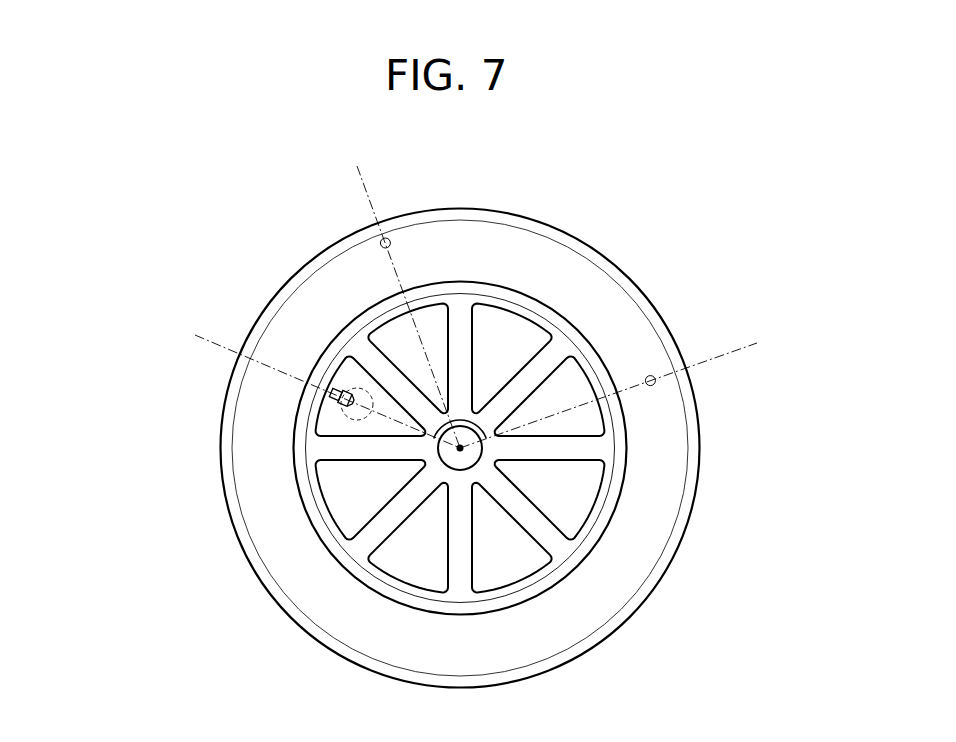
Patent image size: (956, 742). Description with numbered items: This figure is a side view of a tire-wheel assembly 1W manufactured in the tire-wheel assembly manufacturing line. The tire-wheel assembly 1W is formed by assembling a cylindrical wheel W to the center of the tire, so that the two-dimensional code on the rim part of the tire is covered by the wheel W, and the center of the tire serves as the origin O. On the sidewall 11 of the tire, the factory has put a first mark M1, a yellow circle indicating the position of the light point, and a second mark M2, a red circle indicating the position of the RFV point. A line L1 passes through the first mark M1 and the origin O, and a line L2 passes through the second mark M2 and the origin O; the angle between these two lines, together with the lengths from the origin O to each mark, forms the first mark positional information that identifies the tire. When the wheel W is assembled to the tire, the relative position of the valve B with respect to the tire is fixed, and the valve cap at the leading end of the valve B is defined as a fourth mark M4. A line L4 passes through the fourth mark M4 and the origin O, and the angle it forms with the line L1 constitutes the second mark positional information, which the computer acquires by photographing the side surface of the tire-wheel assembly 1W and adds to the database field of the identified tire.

The tire-wheel assembly 1W is at (126, 193).
The sidewall 11 is at (572, 236).
The wheel W is at (488, 292).
The origin O is at (460, 451).
The line L1 is at (372, 208).
The line L2 is at (735, 349).
The line L4 is at (222, 347).
The first mark M1 is at (389, 237).
The second mark M2 is at (652, 376).
The fourth mark M4 is at (356, 420).
The valve B is at (332, 399).